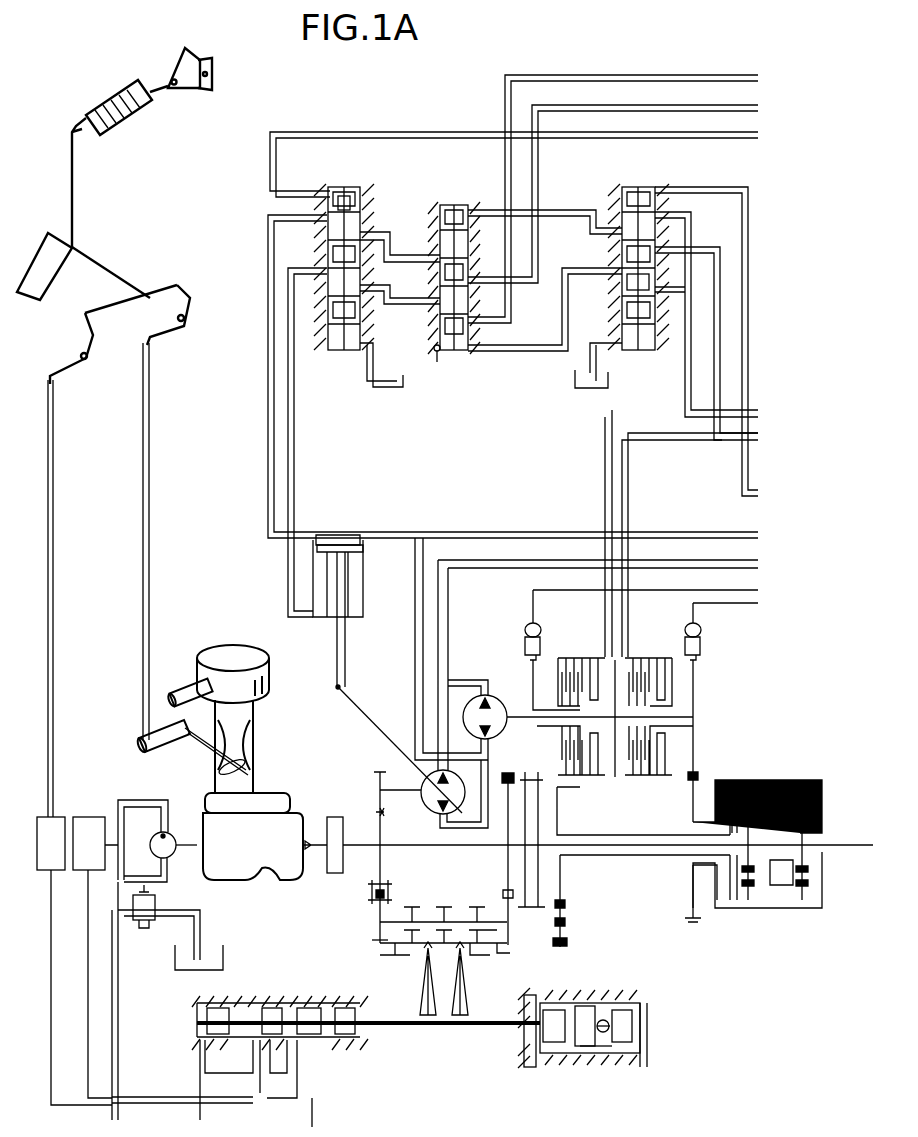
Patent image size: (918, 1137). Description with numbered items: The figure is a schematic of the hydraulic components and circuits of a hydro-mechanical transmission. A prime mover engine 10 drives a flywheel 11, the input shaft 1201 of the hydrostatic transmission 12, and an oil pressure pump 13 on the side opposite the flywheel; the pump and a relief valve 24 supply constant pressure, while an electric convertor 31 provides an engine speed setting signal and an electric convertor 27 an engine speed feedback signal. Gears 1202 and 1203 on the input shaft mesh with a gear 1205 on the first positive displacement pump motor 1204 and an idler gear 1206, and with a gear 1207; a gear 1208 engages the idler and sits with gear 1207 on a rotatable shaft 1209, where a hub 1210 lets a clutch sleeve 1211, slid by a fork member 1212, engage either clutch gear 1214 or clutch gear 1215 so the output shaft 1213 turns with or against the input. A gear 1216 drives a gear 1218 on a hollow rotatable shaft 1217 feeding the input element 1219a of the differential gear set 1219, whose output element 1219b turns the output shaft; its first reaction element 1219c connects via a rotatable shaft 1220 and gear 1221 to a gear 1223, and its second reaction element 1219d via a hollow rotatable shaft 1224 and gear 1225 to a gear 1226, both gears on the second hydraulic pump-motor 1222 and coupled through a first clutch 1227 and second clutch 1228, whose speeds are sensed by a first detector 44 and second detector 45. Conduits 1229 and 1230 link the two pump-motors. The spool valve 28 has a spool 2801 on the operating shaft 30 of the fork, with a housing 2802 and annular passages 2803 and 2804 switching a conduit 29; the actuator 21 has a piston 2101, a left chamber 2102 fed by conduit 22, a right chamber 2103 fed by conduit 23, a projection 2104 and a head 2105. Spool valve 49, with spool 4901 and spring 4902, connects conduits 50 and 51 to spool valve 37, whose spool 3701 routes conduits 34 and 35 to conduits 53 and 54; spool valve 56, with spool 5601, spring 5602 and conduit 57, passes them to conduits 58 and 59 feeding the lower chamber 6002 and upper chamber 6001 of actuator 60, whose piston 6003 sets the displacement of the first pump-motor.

The prime mover engine 10 is at (247, 880).
The flywheel 11 is at (332, 870).
The hydrostatic transmission 12 is at (602, 819).
The oil pressure pump 13 is at (172, 832).
The actuator 21 is at (617, 1029).
The conduit 22 is at (524, 1058).
The conduit 23 is at (733, 187).
The relief valve 24 is at (145, 925).
The electric convertor 27 is at (93, 815).
The spool valve 28 is at (249, 1021).
The conduit 29 is at (326, 1090).
The operating shaft 30 is at (408, 1028).
The electric convertor 31 is at (58, 815).
The conduit 34 is at (588, 105).
The conduit 35 is at (529, 80).
The spool valve 37 is at (458, 204).
The first detector 44 is at (524, 628).
The second detector 45 is at (702, 633).
The spool valve 49 is at (663, 182).
The conduit 50 is at (566, 268).
The conduit 51 is at (568, 210).
The conduit 53 is at (406, 304).
The conduit 54 is at (412, 258).
The spool valve 56 is at (373, 200).
The conduit 57 is at (378, 134).
The conduit 58 is at (295, 432).
The conduit 59 is at (267, 440).
The actuator 60 is at (363, 587).
The input shaft 1201 is at (430, 845).
The gear 1202 is at (380, 830).
The gear 1203 is at (503, 892).
The first positive displacement pump motor 1204 is at (425, 775).
The gear 1205 is at (378, 786).
The idler gear 1206 is at (374, 900).
The gear 1207 is at (508, 950).
The gear 1208 is at (378, 942).
The rotatable shaft 1209 is at (566, 943).
The hub 1210 is at (440, 912).
The clutch sleeve 1211 is at (440, 958).
The fork member 1212 is at (466, 1002).
The output shaft 1213 is at (843, 840).
The clutch gear 1214 is at (485, 958).
The clutch gear 1215 is at (398, 958).
The gear 1216 is at (566, 922).
The hollow rotatable shaft 1217 is at (640, 858).
The gear 1218 is at (566, 888).
The differential gear set 1219 is at (799, 781).
The input element 1219a is at (745, 880).
The output element 1219b is at (792, 880).
The first reaction element 1219c is at (762, 880).
The second reaction element 1219d is at (735, 785).
The rotatable shaft 1220 is at (610, 835).
The gear 1221 is at (530, 800).
The second hydraulic pump-motor 1222 is at (490, 695).
The gear 1223 is at (488, 740).
The hollow rotatable shaft 1224 is at (693, 920).
The gear 1225 is at (693, 888).
The gear 1226 is at (695, 752).
The first clutch 1227 is at (576, 658).
The second clutch 1228 is at (653, 658).
The conduit 1229 is at (440, 676).
The conduit 1230 is at (419, 698).
The piston 2101 is at (590, 1006).
The left chamber 2102 is at (550, 1010).
The right chamber 2103 is at (633, 1030).
The annular radially inward projection 2104 is at (598, 1053).
The head 2105 is at (608, 1020).
The spool 2801 is at (308, 1008).
The housing 2802 is at (220, 1008).
The annular passage 2803 is at (240, 1036).
The annular passage 2804 is at (305, 1040).
The spool 3701 is at (458, 362).
The spool 4901 is at (622, 296).
The spring 4902 is at (638, 352).
The spool 5601 is at (348, 196).
The spring 5602 is at (345, 353).
The upper chamber 6001 is at (320, 535).
The lower chamber 6002 is at (355, 600).
The piston 6003 is at (362, 548).